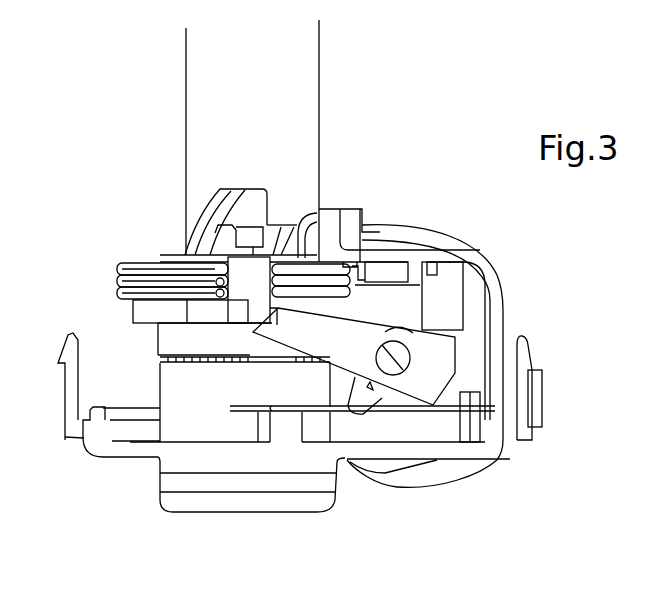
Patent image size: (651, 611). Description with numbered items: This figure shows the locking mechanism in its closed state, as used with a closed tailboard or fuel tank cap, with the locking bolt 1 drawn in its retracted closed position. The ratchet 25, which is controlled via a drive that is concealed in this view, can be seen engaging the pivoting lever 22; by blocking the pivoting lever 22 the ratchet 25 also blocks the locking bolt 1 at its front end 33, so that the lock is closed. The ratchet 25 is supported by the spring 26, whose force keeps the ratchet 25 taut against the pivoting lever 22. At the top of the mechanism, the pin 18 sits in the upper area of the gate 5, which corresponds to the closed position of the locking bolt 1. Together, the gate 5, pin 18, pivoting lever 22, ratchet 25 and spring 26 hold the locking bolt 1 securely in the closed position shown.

The locking bolt 1 is at (310, 80).
The gate 5 is at (230, 198).
The pin 18 is at (253, 237).
The pivoting lever 22 is at (147, 311).
The ratchet 25 is at (440, 358).
The spring 26 is at (422, 407).
The front end 33 is at (267, 335).